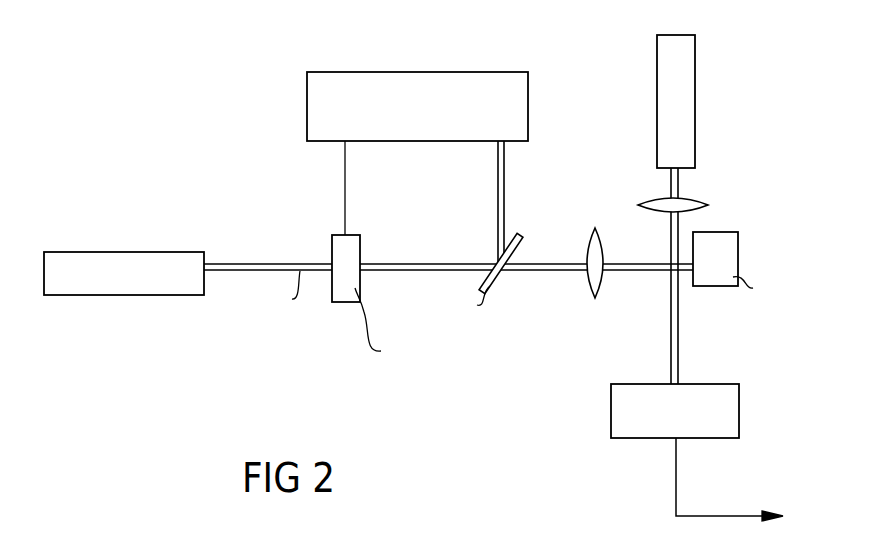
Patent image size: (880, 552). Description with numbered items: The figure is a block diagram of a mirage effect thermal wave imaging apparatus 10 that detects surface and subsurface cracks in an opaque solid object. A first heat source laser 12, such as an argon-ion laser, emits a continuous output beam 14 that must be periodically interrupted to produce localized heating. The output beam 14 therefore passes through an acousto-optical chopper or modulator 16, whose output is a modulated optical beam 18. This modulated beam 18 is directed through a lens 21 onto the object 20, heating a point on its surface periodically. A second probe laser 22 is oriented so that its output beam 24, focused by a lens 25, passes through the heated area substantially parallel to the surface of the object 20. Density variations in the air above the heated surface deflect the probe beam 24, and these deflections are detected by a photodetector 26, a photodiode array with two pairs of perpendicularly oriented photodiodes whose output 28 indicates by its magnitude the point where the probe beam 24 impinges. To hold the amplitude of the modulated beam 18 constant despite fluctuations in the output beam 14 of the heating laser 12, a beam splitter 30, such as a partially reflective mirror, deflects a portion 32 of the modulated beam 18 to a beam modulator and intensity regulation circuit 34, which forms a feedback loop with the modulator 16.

The thermal wave imaging apparatus 10 is at (212, 118).
The first heat source laser 12 is at (133, 252).
The output beam 14 is at (267, 263).
The acousto-optical modulator 16 is at (337, 302).
The modulated optical beam 18 is at (412, 263).
The object 20 is at (732, 246).
The lens 21 is at (600, 298).
The second probe laser 22 is at (659, 78).
The probe output beam 24 is at (680, 328).
The lens 25 is at (707, 204).
The photodetector 26 is at (727, 392).
The photodetector output 28 is at (731, 515).
The beam splitter 30 is at (490, 285).
The deflected beam portion 32 is at (505, 183).
The beam modulator and intensity regulation circuit 34 is at (400, 75).